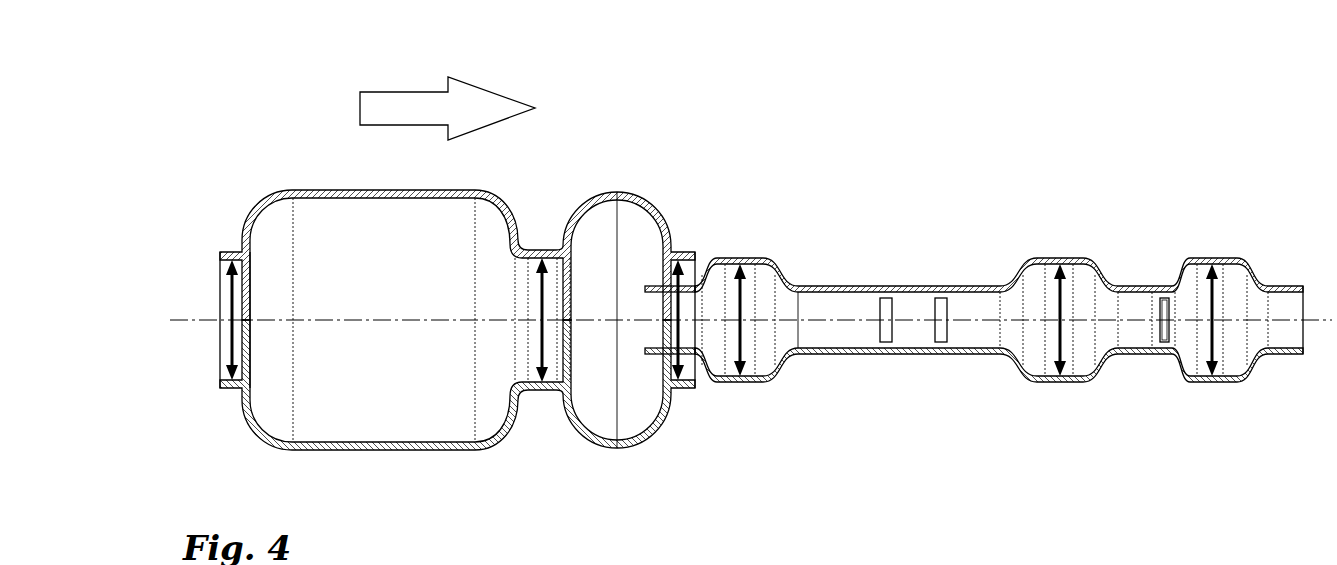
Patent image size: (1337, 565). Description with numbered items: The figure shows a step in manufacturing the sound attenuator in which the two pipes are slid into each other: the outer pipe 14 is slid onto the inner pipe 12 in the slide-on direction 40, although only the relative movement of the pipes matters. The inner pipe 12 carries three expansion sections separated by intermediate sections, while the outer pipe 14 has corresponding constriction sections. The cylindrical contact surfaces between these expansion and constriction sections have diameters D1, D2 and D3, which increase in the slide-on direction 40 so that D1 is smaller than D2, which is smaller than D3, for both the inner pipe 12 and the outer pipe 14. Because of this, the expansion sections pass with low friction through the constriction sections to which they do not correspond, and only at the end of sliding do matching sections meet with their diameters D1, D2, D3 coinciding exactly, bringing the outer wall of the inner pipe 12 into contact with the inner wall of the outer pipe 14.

The inner pipe 12 is at (1260, 207).
The outer pipe 14 is at (658, 184).
The slide-on direction 40 is at (425, 108).
The first diameter D1 is at (235, 322).
The second diameter D2 is at (542, 322).
The third diameter D3 is at (675, 317).